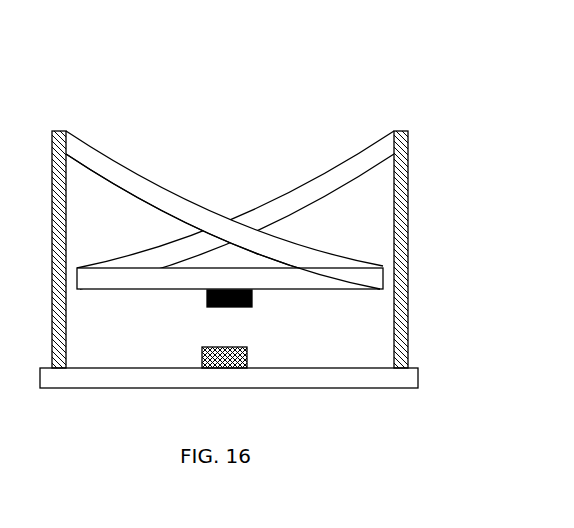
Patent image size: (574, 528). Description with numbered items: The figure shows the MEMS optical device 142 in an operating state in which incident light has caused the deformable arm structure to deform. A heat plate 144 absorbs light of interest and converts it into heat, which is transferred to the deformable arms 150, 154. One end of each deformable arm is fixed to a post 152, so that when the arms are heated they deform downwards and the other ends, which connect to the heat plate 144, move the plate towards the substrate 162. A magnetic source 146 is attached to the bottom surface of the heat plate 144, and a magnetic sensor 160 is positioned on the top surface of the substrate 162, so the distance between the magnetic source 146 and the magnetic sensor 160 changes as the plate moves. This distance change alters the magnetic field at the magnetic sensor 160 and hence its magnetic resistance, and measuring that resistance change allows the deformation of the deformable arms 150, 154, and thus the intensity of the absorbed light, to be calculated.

The vibration isolation assembly 142 is at (217, 104).
The heat plate 144 is at (146, 282).
The magnetic source 146 is at (245, 307).
The deformable arm 150 is at (108, 170).
The post 152 is at (395, 260).
The deformable arm 154 is at (340, 168).
The magnetic sensor 160 is at (217, 360).
The substrate 162 is at (269, 380).